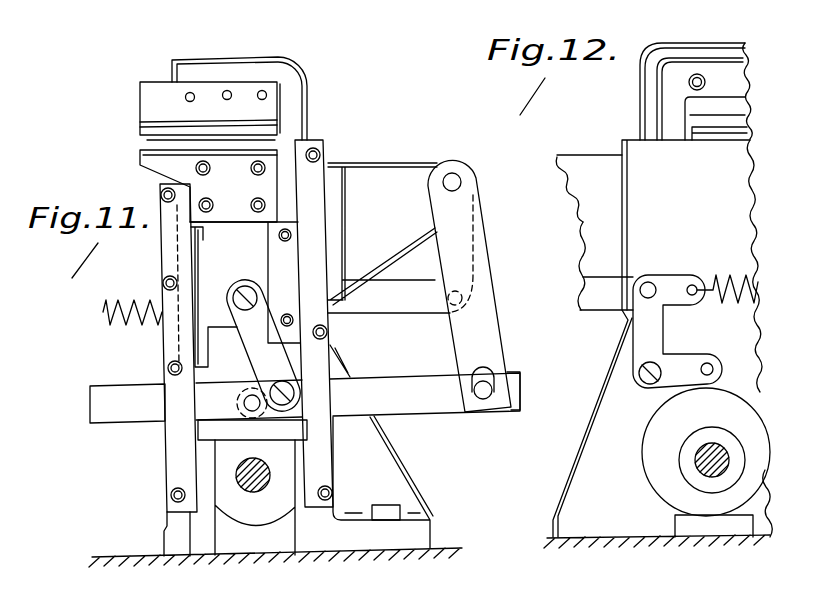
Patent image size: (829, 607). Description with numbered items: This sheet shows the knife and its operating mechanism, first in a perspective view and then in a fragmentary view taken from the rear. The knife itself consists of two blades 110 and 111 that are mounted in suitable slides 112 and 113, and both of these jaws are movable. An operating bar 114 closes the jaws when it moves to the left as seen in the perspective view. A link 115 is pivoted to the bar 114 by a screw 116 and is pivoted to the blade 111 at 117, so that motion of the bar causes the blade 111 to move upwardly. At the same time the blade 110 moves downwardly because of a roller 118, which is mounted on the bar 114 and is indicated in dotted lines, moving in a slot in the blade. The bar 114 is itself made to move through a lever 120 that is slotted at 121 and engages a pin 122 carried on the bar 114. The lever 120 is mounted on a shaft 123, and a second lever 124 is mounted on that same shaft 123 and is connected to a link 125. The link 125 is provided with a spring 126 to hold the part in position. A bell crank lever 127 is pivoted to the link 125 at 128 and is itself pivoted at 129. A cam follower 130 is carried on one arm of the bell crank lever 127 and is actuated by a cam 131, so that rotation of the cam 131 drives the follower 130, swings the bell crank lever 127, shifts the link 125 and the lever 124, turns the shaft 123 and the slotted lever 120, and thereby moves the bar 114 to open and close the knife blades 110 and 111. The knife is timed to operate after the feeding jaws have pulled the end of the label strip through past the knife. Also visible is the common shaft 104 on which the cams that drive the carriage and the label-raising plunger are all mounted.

In FIG. 11, the common shaft 104 is at (256, 484).
In FIG. 12, the common shaft 104 is at (711, 443).
In FIG. 11, the blade 110 is at (140, 103).
In FIG. 12, the blade 110 is at (718, 105).
In FIG. 11, the blade 111 is at (148, 162).
In FIG. 12, the blade 111 is at (717, 135).
In FIG. 11, the slide 112 is at (165, 238).
In FIG. 11, the slide 113 is at (312, 222).
In FIG. 11, the operating bar 114 is at (123, 413).
In FIG. 11, the link 115 is at (249, 335).
In FIG. 11, the screw 116 is at (294, 393).
In FIG. 11, the pivot 117 is at (243, 286).
In FIG. 11, the roller 118 is at (253, 429).
In FIG. 11, the lever 120 is at (488, 330).
In FIG. 11, the slot 121 is at (492, 408).
In FIG. 11, the pin 122 is at (486, 386).
In FIG. 11, the shaft 123 is at (452, 174).
In FIG. 11, the lever 124 is at (473, 247).
In FIG. 11, the link 125 is at (408, 300).
In FIG. 12, the link 125 is at (595, 298).
In FIG. 11, the spring 126 is at (129, 330).
In FIG. 12, the spring 126 is at (723, 272).
In FIG. 12, the bell crank lever 127 is at (652, 327).
In FIG. 12, the pivot 128 is at (648, 282).
In FIG. 12, the pivot 129 is at (645, 388).
In FIG. 12, the cam follower 130 is at (714, 362).
In FIG. 11, the cam 131 is at (232, 510).
In FIG. 12, the cam 131 is at (647, 438).